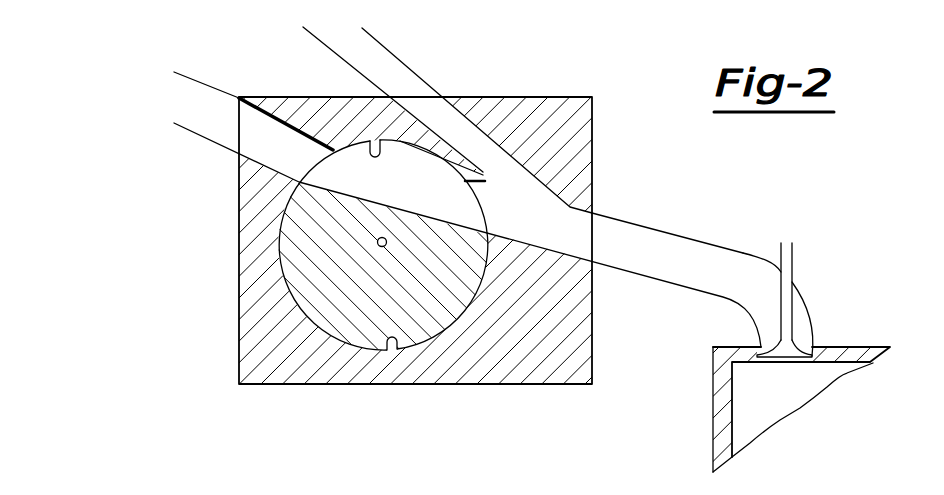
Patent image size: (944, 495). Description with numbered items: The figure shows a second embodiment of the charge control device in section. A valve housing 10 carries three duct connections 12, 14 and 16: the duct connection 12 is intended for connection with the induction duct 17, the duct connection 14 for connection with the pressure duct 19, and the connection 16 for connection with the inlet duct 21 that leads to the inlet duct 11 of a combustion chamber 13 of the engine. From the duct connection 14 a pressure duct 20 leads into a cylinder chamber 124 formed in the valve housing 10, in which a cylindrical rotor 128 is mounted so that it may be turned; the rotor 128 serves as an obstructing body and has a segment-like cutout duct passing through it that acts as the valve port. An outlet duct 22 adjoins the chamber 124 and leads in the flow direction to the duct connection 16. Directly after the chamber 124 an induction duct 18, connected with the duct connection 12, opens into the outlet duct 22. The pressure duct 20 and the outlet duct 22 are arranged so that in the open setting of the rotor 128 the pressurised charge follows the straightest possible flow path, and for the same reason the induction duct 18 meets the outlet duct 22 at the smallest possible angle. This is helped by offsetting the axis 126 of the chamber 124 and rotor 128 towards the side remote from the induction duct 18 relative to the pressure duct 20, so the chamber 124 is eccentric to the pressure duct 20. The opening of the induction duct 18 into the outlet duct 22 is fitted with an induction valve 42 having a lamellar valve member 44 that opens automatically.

The valve housing 10 is at (511, 373).
The inlet duct of combustion chamber 11 is at (787, 303).
The duct connection 12 is at (417, 97).
The combustion chamber 13 is at (782, 398).
The duct connection 14 is at (237, 133).
The duct connection 16 is at (595, 234).
The induction duct 17 is at (377, 62).
The induction duct 18 is at (458, 128).
The pressure duct 19 is at (200, 113).
The pressure duct 20 is at (262, 143).
The inlet duct 21 is at (655, 252).
The outlet duct 22 is at (547, 230).
The induction valve 42 is at (486, 165).
The lamellar valve member 44 is at (516, 172).
The cylinder chamber 124 is at (375, 148).
The axis 126 is at (380, 248).
The cylindrical rotor 128 is at (333, 293).